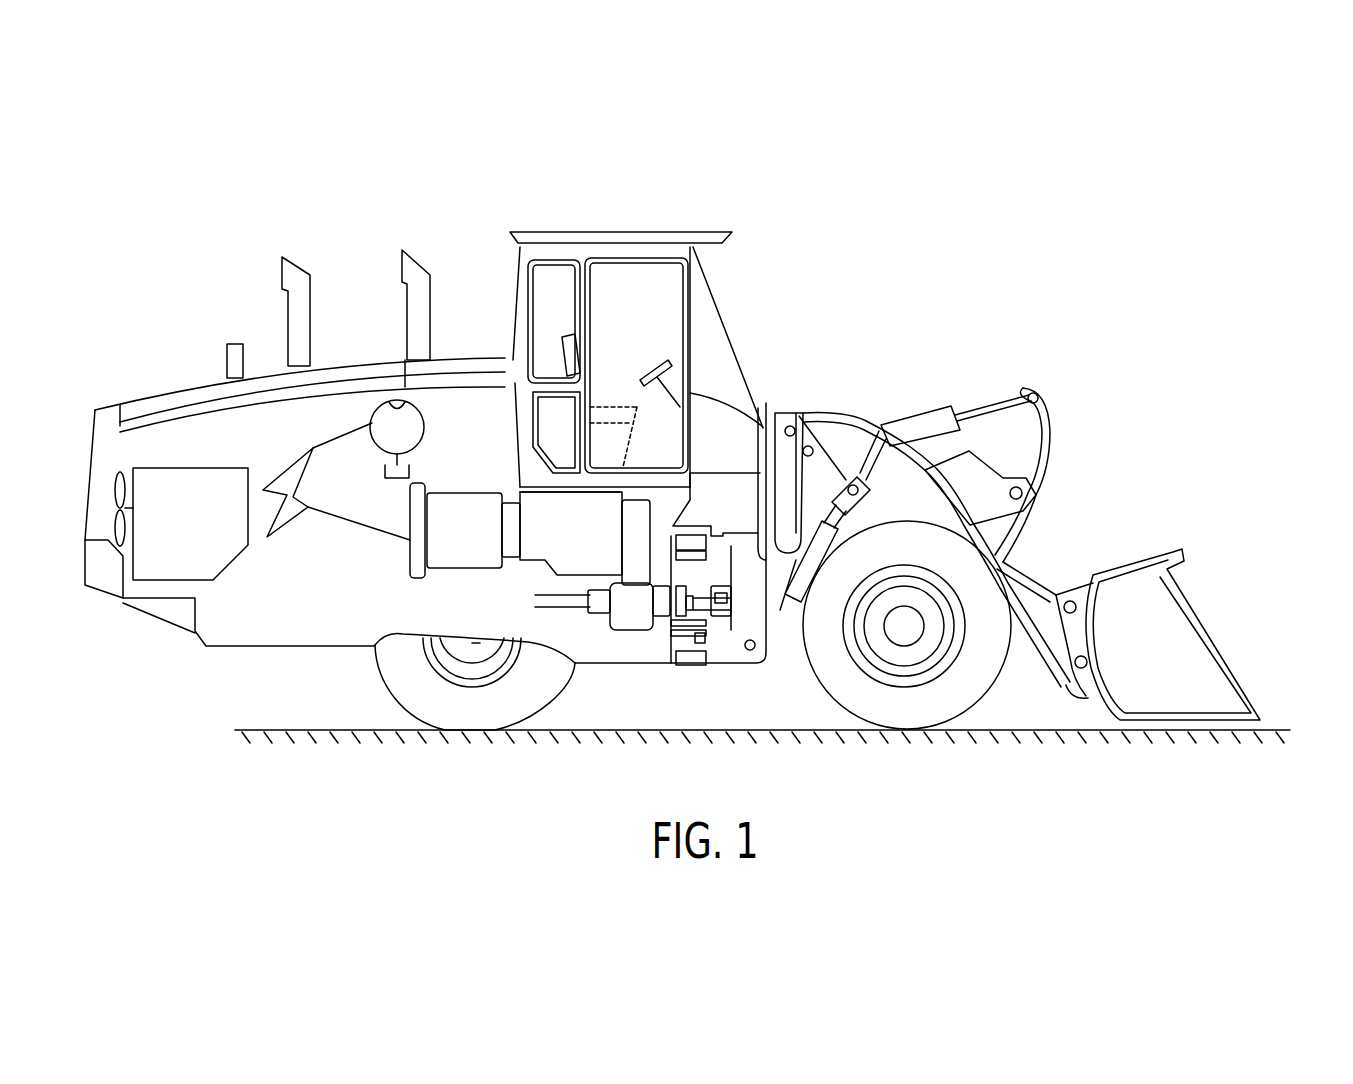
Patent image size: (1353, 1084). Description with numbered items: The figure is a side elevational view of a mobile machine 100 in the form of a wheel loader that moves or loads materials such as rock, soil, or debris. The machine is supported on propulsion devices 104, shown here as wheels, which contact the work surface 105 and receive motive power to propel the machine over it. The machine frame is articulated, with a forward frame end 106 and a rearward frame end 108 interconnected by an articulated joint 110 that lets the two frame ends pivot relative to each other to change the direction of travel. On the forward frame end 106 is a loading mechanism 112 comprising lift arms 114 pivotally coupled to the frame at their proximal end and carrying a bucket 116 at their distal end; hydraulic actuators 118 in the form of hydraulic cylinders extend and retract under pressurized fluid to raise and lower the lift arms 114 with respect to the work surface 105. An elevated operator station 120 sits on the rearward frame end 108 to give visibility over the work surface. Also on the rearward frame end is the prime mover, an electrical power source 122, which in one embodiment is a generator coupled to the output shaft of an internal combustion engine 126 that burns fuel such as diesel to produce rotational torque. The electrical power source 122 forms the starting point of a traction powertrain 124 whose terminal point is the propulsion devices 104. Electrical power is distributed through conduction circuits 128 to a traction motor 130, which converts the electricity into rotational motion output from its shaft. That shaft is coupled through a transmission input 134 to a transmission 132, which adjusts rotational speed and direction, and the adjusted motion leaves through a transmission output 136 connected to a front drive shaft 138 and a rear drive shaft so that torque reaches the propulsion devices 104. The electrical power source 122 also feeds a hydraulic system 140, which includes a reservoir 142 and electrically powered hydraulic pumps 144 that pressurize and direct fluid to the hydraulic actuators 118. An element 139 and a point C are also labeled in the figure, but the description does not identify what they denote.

The mobile machine 100 is at (442, 205).
The propulsion devices 104 is at (437, 687).
The work surface 105 is at (1286, 721).
The forward frame end 106 is at (804, 420).
The rearward frame end 108 is at (170, 616).
The articulated joint 110 is at (674, 650).
The loading mechanism 112 is at (1032, 407).
The lift arms 114 is at (887, 413).
The bucket 116 is at (1197, 622).
The hydraulic actuators 118 is at (958, 440).
The operator station 120 is at (612, 235).
The electrical power source 122 is at (282, 480).
The traction powertrain 124 is at (205, 636).
The internal combustion engine 126 is at (197, 480).
The conduction circuit 128 is at (322, 444).
The traction motor 130 is at (452, 549).
The transmission 132 is at (565, 528).
The transmission input 134 is at (502, 545).
The transmission output 136 is at (617, 609).
The front drive shaft 138 is at (705, 600).
The output shaft 139 is at (560, 597).
The hydraulic system 140 is at (389, 366).
The reservoir 142 is at (404, 462).
The hydraulic pumps 144 is at (417, 412).
The center / pivot point C is at (1067, 590).